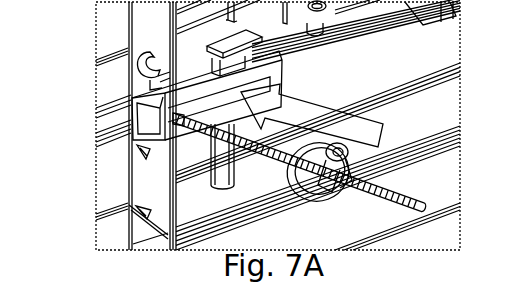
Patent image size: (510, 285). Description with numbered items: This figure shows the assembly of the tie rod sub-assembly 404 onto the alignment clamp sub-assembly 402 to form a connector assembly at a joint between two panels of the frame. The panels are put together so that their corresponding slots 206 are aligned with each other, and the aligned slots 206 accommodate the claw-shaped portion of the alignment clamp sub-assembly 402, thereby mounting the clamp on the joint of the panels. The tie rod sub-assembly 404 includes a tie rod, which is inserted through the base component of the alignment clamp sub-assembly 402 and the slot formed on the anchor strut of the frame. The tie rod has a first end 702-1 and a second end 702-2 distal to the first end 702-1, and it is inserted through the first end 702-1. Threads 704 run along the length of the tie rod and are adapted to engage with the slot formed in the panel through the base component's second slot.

The slots 206 is at (140, 50).
The alignment clamp sub-assembly 402 is at (134, 89).
The first end 702-1 is at (128, 142).
The threads 704 is at (193, 180).
The tie rod sub-assembly 404 is at (269, 161).
The second end 702-2 is at (372, 202).